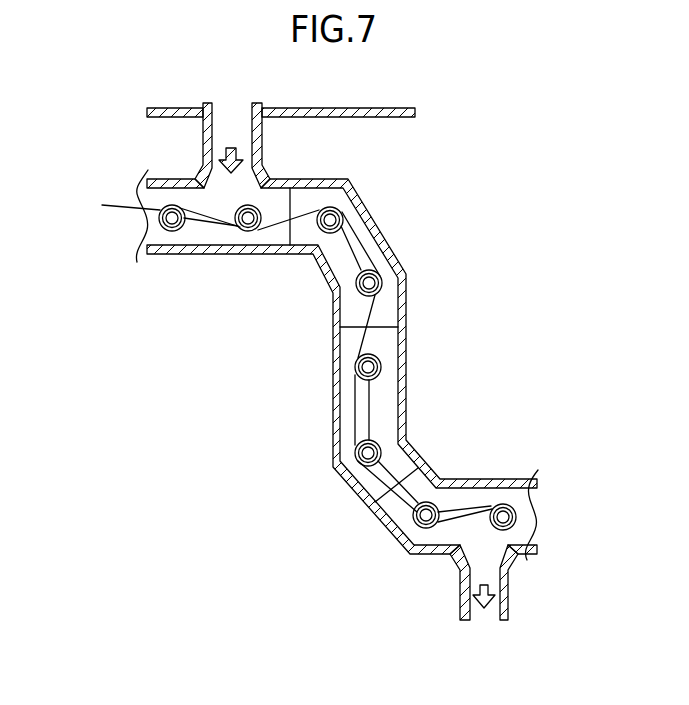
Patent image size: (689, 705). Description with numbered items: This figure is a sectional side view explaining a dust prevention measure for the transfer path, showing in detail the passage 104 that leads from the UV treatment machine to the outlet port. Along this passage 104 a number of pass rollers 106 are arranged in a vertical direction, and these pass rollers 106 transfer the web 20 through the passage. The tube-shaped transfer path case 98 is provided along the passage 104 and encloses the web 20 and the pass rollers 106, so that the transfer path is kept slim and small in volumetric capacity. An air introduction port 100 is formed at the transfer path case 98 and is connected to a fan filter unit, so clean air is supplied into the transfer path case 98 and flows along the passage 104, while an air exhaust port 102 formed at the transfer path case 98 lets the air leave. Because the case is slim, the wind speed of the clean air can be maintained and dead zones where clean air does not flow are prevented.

The web 20 is at (118, 205).
The transfer path case 98 is at (413, 371).
The air introduction port 100 is at (236, 133).
The air exhaust port 102 is at (482, 618).
The passage 104 is at (369, 240).
The pass rollers 106 is at (247, 231).